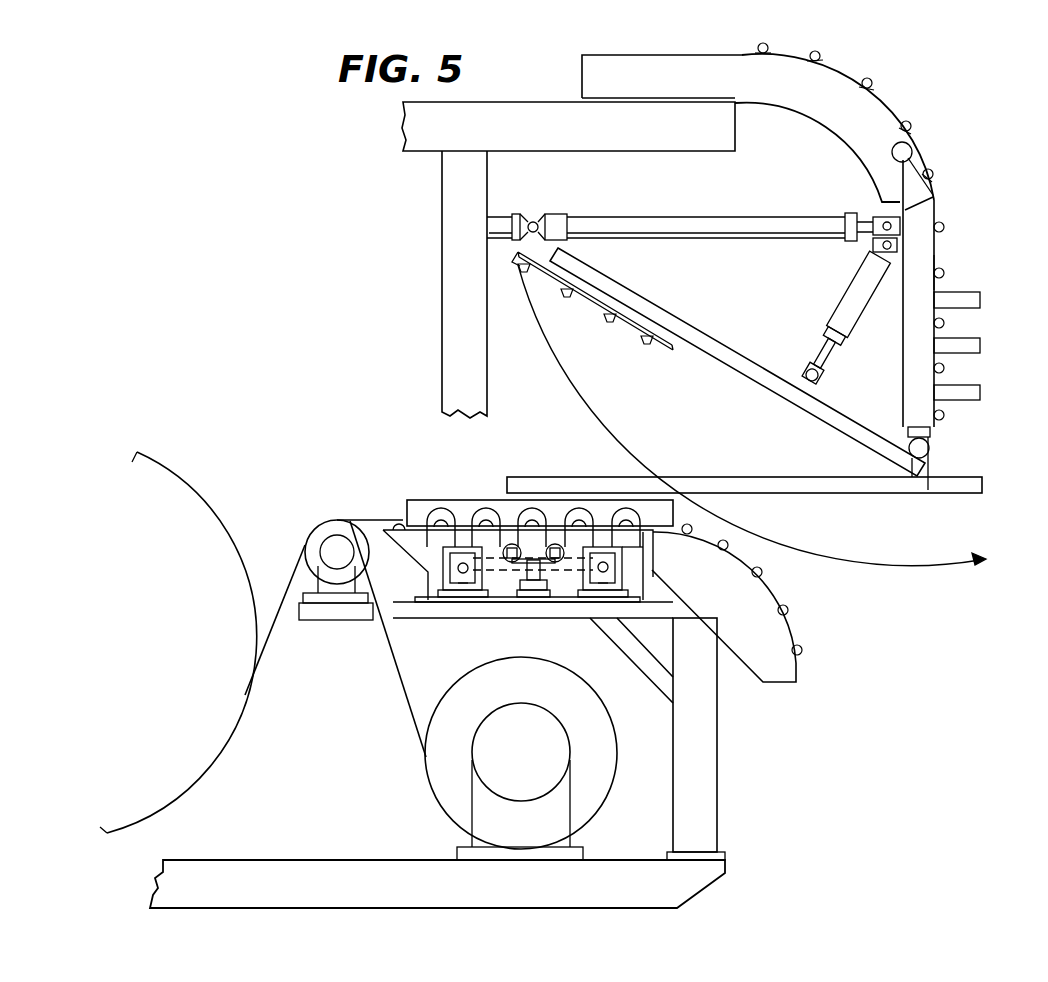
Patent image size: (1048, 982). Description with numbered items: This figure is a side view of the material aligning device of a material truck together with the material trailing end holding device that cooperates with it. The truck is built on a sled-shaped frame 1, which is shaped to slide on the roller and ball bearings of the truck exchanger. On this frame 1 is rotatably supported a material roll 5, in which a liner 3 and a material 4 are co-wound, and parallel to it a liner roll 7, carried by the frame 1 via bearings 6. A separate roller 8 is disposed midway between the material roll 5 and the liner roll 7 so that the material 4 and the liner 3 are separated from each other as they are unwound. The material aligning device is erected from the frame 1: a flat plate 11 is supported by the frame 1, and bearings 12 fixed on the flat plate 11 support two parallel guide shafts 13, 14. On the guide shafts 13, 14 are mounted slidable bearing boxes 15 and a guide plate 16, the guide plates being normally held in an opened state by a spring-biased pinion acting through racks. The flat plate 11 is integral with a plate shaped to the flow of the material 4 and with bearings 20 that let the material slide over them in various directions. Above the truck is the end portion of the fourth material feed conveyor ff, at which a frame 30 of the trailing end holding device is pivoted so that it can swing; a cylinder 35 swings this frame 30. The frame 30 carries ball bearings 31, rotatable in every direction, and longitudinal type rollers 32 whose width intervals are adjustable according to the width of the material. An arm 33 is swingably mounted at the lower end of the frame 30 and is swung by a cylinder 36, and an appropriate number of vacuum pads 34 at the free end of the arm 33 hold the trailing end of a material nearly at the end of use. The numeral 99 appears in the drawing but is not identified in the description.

The sled-shaped frame 1 is at (322, 860).
The liner 3 is at (398, 654).
The material 4 is at (400, 525).
The material roll 5 is at (190, 452).
The bearings 6 is at (570, 748).
The liner roll 7 is at (570, 667).
The separate roller 8 is at (308, 570).
The flat plate 11 is at (660, 597).
The bearings 12 is at (445, 580).
The guide shaft 13 is at (463, 582).
The guide shaft 14 is at (598, 580).
The bearing boxes 15 is at (622, 552).
The guide plate 16 is at (675, 517).
The bearings 20 is at (788, 612).
The frame 30 is at (904, 342).
The ball bearings 31 is at (945, 273).
The longitudinal type rollers 32 is at (982, 298).
The arm 33 is at (732, 347).
The vacuum pads 34 is at (648, 344).
The cylinder 35 is at (768, 217).
The cylinder 36 is at (842, 308).
The material feed conveyor device ff is at (882, 108).
The roller guide 99 is at (963, 263).